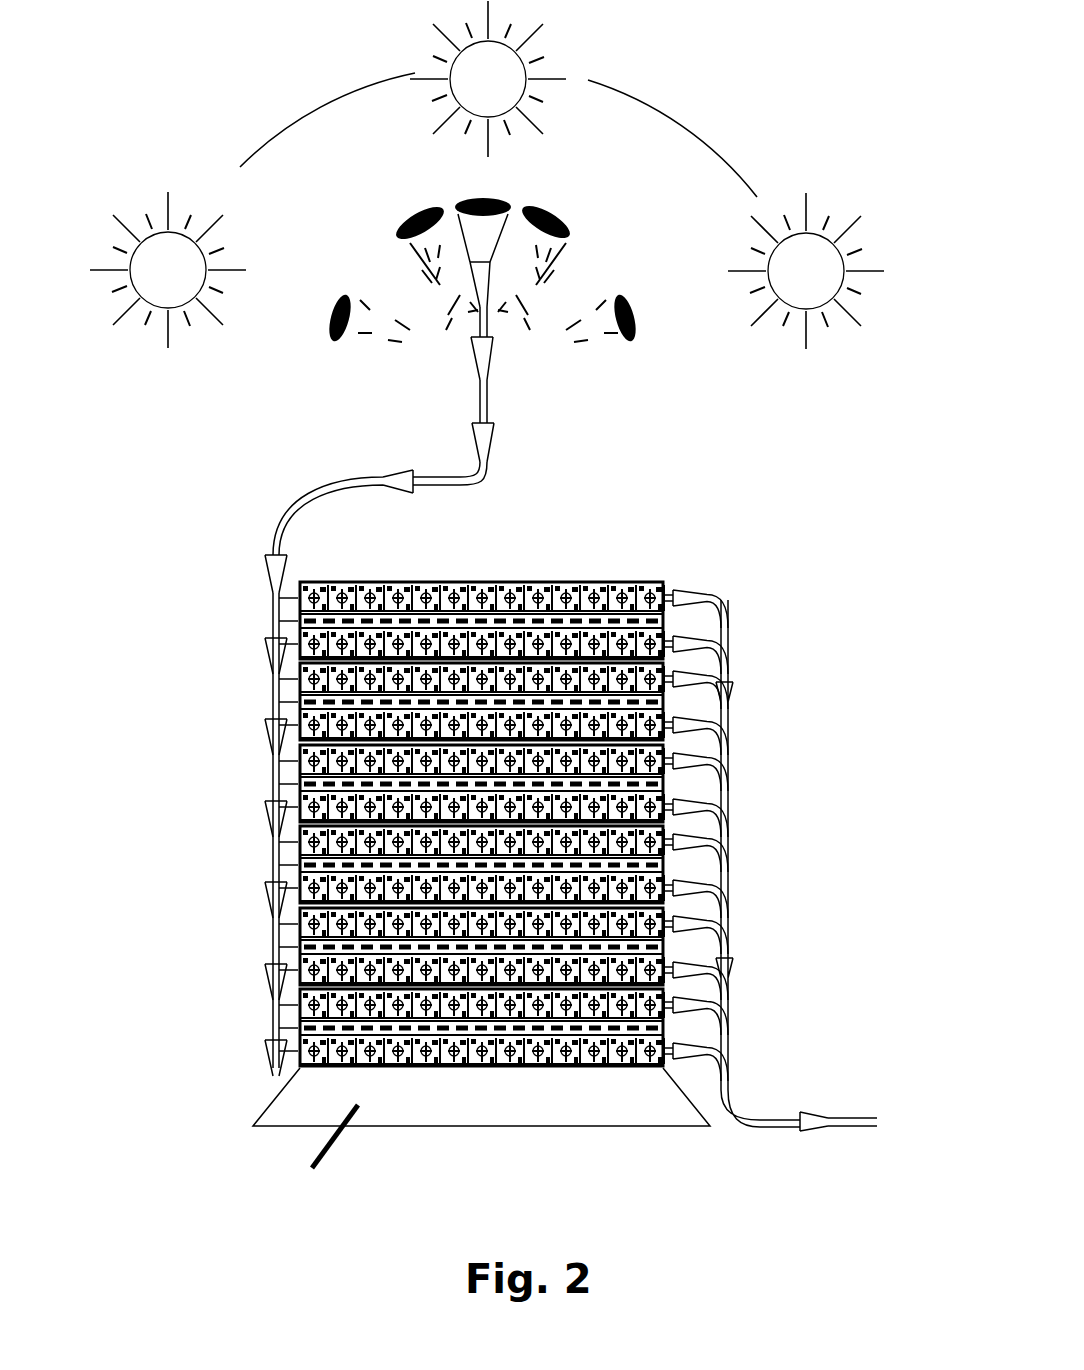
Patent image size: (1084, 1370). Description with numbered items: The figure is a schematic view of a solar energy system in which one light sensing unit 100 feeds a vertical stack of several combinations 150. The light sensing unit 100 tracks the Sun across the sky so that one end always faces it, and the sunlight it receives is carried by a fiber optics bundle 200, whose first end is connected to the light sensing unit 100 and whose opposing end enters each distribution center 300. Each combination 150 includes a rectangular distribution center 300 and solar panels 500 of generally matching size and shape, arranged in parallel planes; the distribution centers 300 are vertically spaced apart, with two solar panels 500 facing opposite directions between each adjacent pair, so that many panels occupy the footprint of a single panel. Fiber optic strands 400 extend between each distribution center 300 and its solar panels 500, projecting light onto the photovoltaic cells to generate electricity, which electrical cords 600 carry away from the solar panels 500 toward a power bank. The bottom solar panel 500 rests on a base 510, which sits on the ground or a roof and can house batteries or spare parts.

The light sensing unit 100 is at (498, 188).
The fiber optics bundle 200 is at (297, 500).
The distribution center 300 is at (266, 637).
The combination 150 is at (672, 659).
The solar panel 500 is at (297, 598).
The fiber optic strand 400 is at (676, 611).
The electrical cord 600 is at (766, 1132).
The base 510 is at (481, 1138).